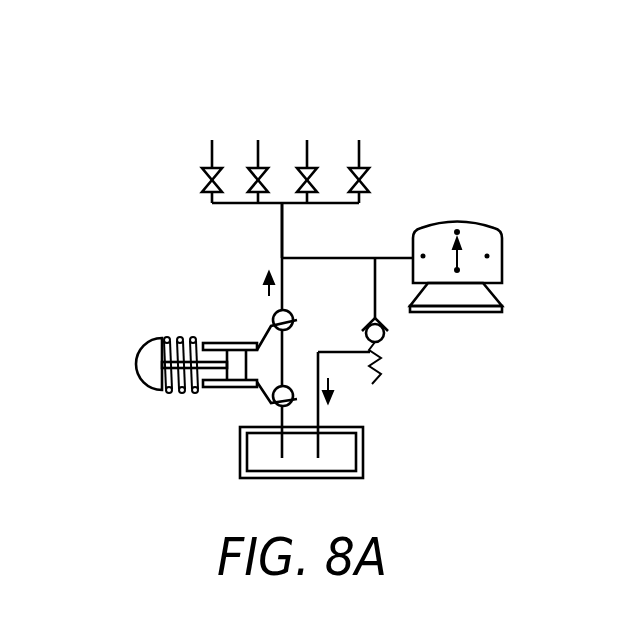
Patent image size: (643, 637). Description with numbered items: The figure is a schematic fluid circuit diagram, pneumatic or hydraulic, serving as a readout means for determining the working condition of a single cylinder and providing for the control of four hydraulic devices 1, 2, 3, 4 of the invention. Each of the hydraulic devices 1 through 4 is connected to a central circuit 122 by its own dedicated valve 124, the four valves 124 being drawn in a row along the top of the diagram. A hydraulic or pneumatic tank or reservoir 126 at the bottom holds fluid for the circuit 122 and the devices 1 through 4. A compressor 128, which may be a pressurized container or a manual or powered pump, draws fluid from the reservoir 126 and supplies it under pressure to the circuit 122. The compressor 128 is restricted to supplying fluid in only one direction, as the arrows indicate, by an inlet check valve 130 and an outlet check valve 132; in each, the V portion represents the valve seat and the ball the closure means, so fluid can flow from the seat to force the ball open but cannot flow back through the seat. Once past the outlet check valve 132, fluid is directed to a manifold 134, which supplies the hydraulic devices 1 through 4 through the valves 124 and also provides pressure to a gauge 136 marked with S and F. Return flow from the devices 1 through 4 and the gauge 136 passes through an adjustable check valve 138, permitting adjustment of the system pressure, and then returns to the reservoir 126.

The hydraulic device 1 is at (212, 152).
The hydraulic device 2 is at (258, 152).
The hydraulic device 3 is at (307, 152).
The hydraulic device 4 is at (359, 152).
The central circuit 122 is at (478, 432).
The dedicated valve 124 is at (311, 177).
The reservoir 126 is at (240, 446).
The compressor 128 is at (171, 337).
The inlet check valve 130 is at (271, 402).
The outlet check valve 132 is at (273, 317).
The manifold 134 is at (323, 204).
The gauge 136 is at (502, 263).
The adjustable check valve 138 is at (383, 340).